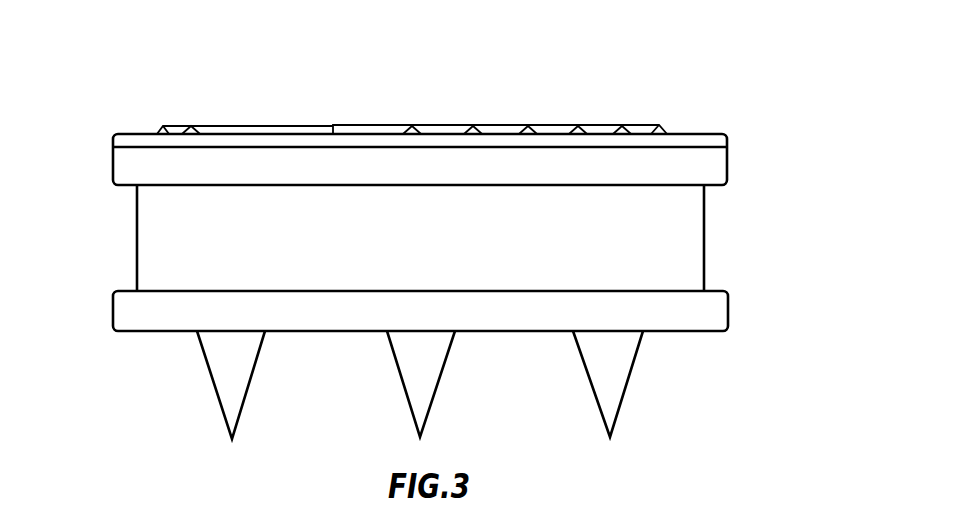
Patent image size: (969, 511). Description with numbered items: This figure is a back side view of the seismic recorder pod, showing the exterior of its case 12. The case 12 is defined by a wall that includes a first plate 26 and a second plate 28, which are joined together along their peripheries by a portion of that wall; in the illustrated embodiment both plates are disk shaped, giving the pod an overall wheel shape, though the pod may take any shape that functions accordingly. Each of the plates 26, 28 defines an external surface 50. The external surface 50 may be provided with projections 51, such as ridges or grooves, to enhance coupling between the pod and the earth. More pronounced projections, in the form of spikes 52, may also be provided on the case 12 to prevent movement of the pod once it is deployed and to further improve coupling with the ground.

The case 12 is at (448, 237).
The first plate 26 is at (712, 332).
The second plate 28 is at (695, 133).
The external surface 50 is at (138, 133).
The projections 51 is at (580, 127).
The spikes 52 is at (583, 367).